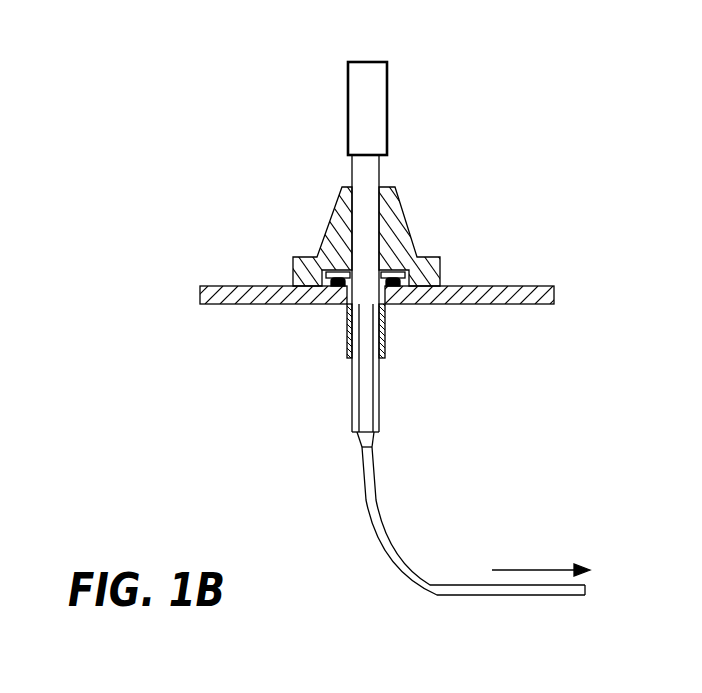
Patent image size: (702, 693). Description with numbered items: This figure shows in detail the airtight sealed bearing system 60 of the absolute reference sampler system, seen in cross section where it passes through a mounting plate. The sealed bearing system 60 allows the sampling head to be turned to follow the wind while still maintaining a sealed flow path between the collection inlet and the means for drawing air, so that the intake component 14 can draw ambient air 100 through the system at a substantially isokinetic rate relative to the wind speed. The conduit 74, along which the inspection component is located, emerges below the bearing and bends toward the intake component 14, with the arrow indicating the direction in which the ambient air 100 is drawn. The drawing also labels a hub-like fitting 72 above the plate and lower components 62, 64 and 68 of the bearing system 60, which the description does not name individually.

The sealed bearing system 60 is at (215, 201).
The hub fitting 72 is at (398, 270).
The sleeve 62 is at (387, 350).
The cannula tube 64 is at (380, 407).
The exposed tube section 68 is at (337, 310).
The intake component 14 is at (473, 521).
The conduit 74 is at (398, 557).
The ambient air 100 is at (527, 568).